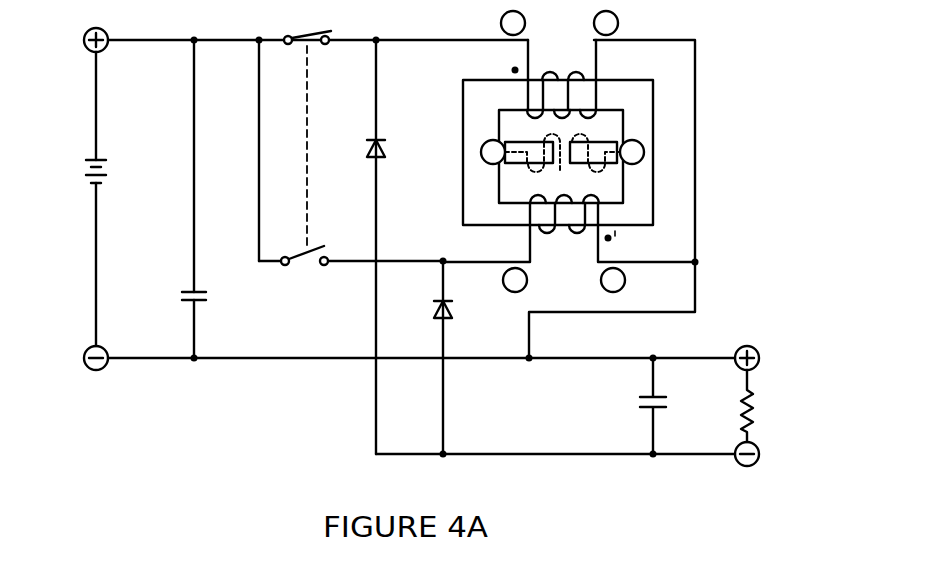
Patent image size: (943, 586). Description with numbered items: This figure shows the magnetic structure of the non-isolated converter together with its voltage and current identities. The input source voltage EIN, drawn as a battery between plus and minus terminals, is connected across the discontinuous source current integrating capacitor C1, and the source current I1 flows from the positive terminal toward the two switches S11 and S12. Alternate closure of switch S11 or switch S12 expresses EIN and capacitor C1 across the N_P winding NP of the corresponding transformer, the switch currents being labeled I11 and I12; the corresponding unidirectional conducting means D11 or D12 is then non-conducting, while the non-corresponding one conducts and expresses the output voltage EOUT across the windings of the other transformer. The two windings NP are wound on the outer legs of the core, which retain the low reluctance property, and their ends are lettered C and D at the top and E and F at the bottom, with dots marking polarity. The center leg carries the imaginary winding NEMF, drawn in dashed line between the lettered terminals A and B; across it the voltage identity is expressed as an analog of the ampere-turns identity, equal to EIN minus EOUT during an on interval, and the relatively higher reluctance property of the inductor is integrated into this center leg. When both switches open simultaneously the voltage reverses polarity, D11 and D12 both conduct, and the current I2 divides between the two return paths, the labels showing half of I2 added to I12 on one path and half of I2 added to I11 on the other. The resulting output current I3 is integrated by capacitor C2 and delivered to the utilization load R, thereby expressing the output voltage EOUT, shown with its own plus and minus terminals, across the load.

The input source voltage EIN is at (54, 199).
The source current integrating capacitor C1 is at (208, 298).
The switch S11 is at (307, 128).
The switch S12 is at (351, 271).
The unidirectional conducting means D11 is at (394, 149).
The unidirectional conducting means D12 is at (462, 311).
The input current I1 is at (232, 26).
The current through S11 I11 is at (366, 28).
The current through S12 I12 is at (430, 252).
The secondary current I2 is at (312, 408).
The output current I3 is at (612, 370).
The N_P winding NP is at (569, 151).
The imaginary winding NEMF is at (562, 163).
The voltage A is at (493, 152).
The identity B is at (632, 152).
The identity C is at (513, 23).
The identity D is at (606, 23).
The source current E is at (515, 280).
The current F is at (613, 280).
The output capacitor C2 is at (664, 406).
The utilization load R is at (712, 406).
The output voltage EOUT is at (768, 406).